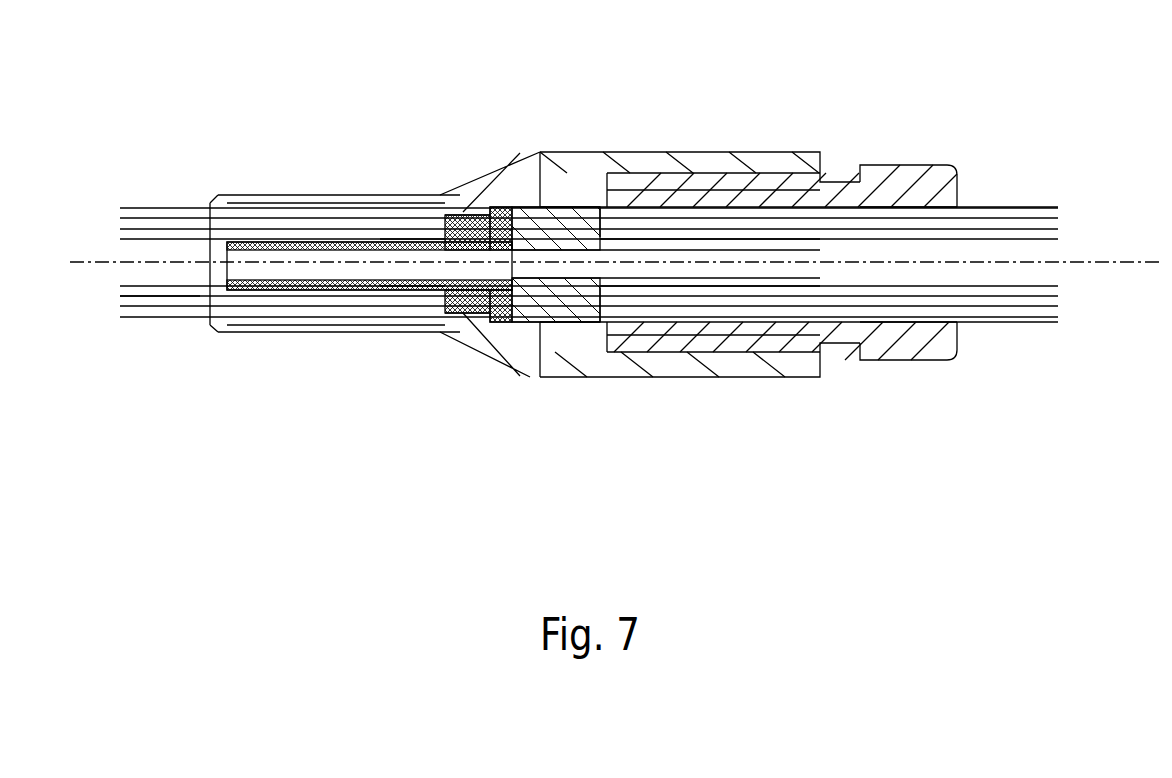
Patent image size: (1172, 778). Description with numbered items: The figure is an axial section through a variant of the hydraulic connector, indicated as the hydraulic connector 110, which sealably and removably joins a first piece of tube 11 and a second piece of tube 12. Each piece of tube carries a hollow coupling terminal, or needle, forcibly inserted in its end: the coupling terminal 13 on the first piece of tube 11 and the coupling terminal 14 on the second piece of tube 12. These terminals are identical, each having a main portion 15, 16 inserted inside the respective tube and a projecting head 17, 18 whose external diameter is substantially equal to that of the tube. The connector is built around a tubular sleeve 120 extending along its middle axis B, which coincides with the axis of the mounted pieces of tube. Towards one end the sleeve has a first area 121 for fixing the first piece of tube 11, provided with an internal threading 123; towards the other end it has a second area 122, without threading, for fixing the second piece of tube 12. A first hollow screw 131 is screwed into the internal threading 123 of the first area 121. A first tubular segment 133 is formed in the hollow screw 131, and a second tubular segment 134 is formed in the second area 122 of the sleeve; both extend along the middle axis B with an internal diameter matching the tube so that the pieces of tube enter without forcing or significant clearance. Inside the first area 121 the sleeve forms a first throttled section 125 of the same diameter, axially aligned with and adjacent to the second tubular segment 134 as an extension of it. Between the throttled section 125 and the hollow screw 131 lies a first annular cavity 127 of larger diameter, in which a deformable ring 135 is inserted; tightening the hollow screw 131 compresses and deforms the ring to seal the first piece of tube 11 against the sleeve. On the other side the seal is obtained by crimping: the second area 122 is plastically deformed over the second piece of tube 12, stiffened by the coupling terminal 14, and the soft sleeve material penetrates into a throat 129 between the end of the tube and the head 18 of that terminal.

The hydraulic connector 110 is at (1013, 175).
The first piece of tube 11 is at (1017, 303).
The second piece of tube 12 is at (195, 302).
The coupling terminal 13 is at (823, 263).
The coupling terminal 14 is at (225, 262).
The main portion 15 is at (667, 273).
The main portion 16 is at (370, 283).
The projecting head 17 is at (580, 297).
The projecting head 18 is at (480, 297).
The tubular sleeve 120 is at (490, 187).
The first area 121 is at (735, 148).
The second area 122 is at (380, 196).
The internal threading 123 is at (790, 173).
The first throttled section 125 is at (522, 325).
The first annular cavity 127 is at (557, 197).
The throat 129 is at (463, 213).
The first hollow screw 131 is at (905, 200).
The first tubular segment 133 is at (920, 207).
The second tubular segment 134 is at (290, 320).
The deformable ring 135 is at (623, 193).
The middle axis B is at (80, 260).